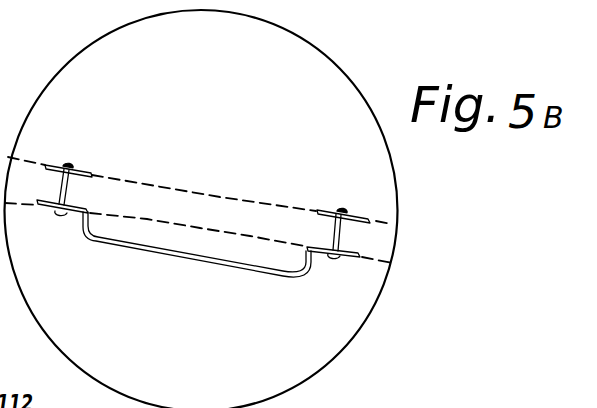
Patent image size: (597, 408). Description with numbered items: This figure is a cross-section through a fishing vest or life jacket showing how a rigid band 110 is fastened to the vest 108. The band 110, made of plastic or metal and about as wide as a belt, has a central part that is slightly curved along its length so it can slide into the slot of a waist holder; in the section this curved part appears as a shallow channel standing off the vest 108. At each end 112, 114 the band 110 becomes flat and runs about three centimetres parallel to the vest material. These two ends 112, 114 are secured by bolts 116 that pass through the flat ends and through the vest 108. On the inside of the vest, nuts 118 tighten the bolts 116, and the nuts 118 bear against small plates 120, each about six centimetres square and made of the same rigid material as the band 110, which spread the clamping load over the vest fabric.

The life vest 108 is at (211, 218).
The rigid band 110 is at (188, 258).
The end of the band 112 is at (75, 216).
The end of the band 114 is at (347, 260).
The bolts 116 is at (58, 213).
The nuts 118 is at (66, 163).
The plates 120 is at (88, 165).